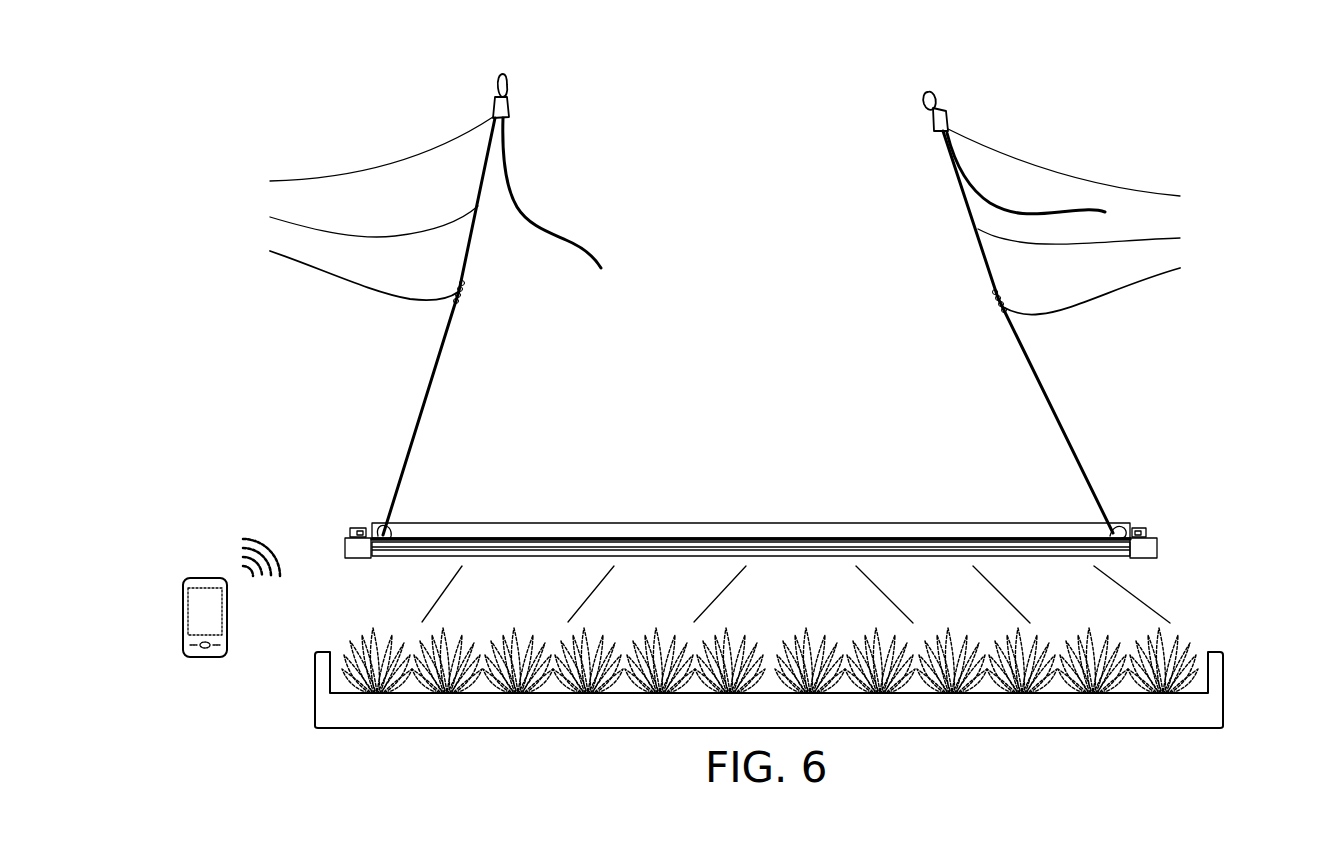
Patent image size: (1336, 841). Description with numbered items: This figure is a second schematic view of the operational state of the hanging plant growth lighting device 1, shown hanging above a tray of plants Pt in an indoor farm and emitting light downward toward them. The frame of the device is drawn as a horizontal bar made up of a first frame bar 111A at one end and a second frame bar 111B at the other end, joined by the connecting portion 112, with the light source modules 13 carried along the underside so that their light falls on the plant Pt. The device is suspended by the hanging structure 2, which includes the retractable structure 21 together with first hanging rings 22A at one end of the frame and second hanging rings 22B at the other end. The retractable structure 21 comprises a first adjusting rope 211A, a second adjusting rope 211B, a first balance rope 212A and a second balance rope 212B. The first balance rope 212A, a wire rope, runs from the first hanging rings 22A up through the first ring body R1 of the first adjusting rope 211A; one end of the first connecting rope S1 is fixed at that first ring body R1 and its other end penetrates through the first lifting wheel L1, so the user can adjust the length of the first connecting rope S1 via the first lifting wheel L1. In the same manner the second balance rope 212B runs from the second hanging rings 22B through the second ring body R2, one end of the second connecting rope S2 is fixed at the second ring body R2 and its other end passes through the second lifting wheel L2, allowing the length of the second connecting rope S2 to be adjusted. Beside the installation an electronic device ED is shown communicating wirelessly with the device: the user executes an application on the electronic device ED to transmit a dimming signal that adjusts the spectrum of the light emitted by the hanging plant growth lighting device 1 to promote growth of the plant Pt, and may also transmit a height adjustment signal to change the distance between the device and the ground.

The hanging plant growth lighting device 1 is at (1238, 153).
The hanging structure 2 is at (1016, 136).
The retractable structure 21 is at (438, 109).
The first adjusting rope 211A is at (236, 178).
The first lifting wheel L1 is at (369, 154).
The first connecting rope S1 is at (361, 221).
The first ring body R1 is at (351, 271).
The first balance rope 212A is at (439, 355).
The second adjusting rope 211B is at (1218, 195).
The second lifting wheel L2 is at (1076, 167).
The second connecting rope S2 is at (1092, 234).
The second ring body R2 is at (1105, 287).
The second balance rope 212B is at (1030, 365).
The connecting portion 112 is at (869, 528).
The light source module 13 is at (984, 547).
The first hanging ring 22A is at (385, 535).
The second hanging ring 22B is at (1117, 533).
The first frame bar 111A is at (348, 535).
The second frame bar 111B is at (1152, 532).
The electronic device ED is at (212, 578).
The plant Pt is at (316, 700).